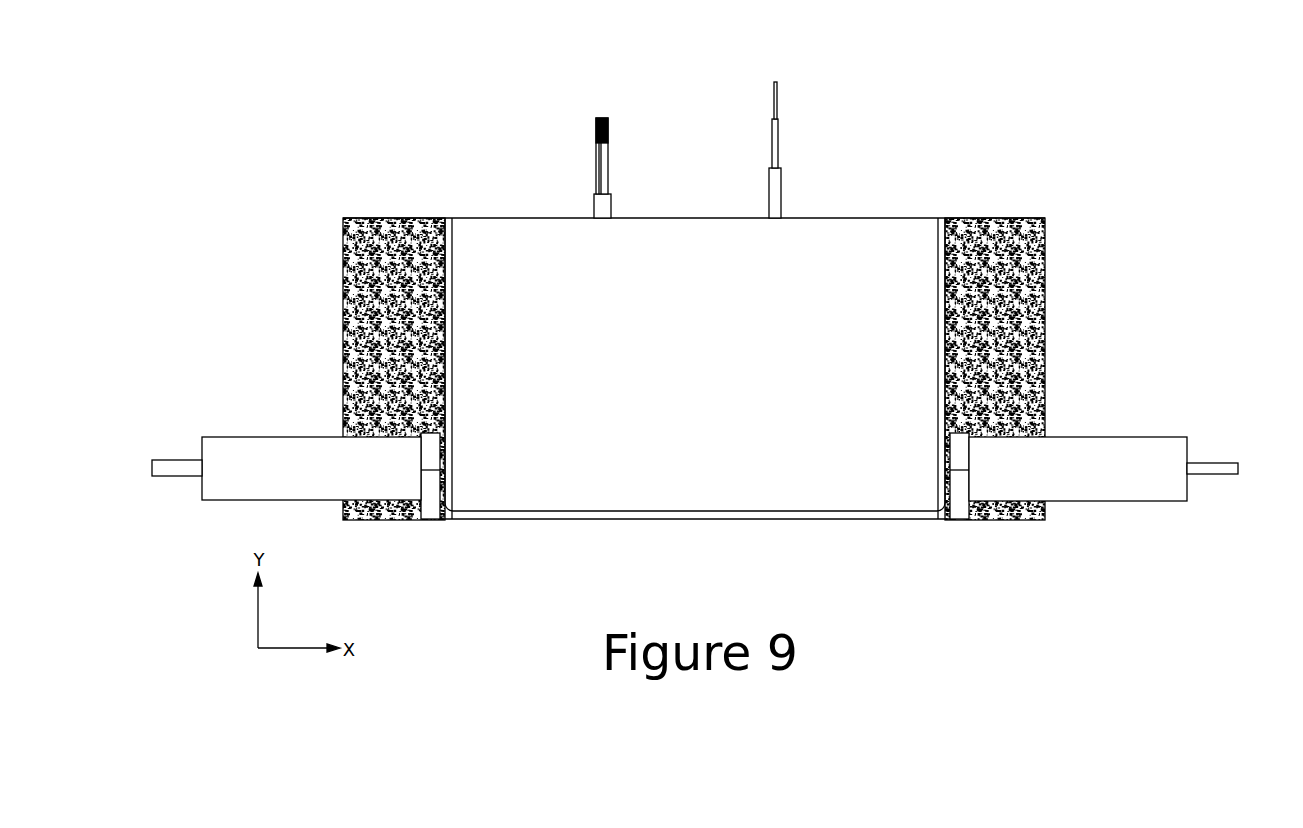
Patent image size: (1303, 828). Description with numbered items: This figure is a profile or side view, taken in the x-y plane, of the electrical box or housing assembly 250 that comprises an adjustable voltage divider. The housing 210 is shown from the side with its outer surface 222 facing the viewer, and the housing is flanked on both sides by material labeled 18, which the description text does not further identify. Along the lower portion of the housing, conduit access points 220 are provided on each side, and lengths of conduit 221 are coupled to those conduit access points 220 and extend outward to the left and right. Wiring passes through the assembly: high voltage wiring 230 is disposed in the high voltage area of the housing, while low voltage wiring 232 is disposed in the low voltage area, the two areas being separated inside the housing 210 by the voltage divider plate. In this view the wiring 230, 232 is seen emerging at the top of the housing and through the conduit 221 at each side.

The insulation 18 is at (992, 257).
The housing 210 is at (690, 391).
The conduit access points 220 is at (972, 458).
The conduit 221 is at (1153, 481).
The outer surface 222 is at (555, 320).
The high voltage wiring 230 is at (778, 135).
The low voltage wiring 232 is at (607, 150).
The adjustable voltage divider assembly 250 is at (200, 141).